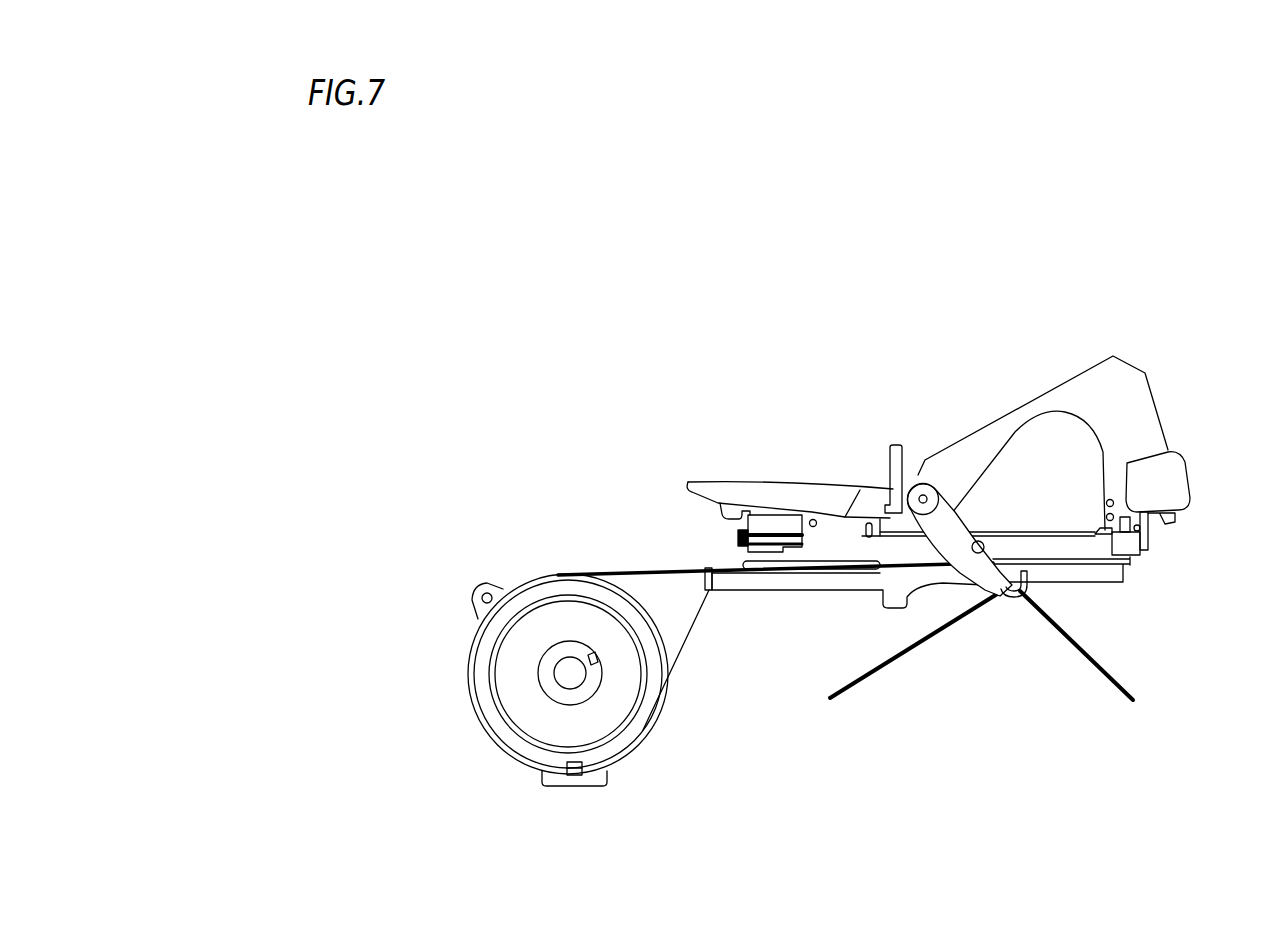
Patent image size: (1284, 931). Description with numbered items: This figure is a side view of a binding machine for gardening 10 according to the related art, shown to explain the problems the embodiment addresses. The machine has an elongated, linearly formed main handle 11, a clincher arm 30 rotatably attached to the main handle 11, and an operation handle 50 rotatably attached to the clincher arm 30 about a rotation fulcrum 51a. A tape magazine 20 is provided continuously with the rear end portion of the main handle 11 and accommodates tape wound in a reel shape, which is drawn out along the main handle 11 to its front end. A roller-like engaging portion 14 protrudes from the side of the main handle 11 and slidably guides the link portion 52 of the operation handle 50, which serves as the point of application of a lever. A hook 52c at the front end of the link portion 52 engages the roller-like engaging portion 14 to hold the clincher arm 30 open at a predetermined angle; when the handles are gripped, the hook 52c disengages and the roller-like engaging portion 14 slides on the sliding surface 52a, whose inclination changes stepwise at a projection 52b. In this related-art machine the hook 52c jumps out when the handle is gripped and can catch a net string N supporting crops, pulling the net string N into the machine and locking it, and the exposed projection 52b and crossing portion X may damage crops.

The binding machine for gardening 10 is at (865, 572).
The main handle 11 is at (1092, 594).
The roller-like engaging portion 14 is at (991, 534).
The tape magazine 20 is at (643, 743).
The clincher arm 30 is at (1162, 382).
The operation handle 50 is at (795, 473).
The rotation fulcrum 51a is at (923, 494).
The link portion 52 is at (963, 525).
The sliding surface 52a is at (957, 528).
The projection 52b is at (992, 536).
The hook 52c is at (1005, 597).
The crossing portion X is at (957, 510).
The net string N is at (1088, 663).